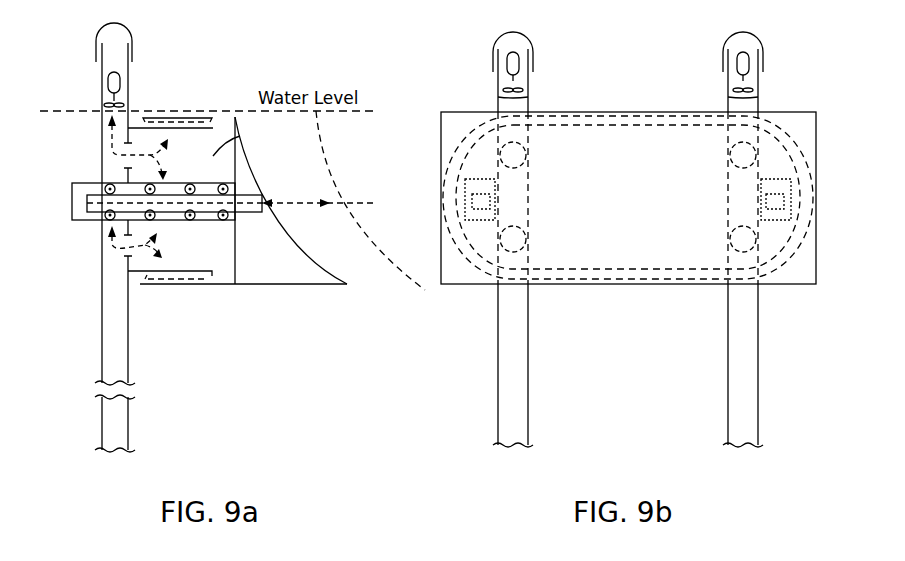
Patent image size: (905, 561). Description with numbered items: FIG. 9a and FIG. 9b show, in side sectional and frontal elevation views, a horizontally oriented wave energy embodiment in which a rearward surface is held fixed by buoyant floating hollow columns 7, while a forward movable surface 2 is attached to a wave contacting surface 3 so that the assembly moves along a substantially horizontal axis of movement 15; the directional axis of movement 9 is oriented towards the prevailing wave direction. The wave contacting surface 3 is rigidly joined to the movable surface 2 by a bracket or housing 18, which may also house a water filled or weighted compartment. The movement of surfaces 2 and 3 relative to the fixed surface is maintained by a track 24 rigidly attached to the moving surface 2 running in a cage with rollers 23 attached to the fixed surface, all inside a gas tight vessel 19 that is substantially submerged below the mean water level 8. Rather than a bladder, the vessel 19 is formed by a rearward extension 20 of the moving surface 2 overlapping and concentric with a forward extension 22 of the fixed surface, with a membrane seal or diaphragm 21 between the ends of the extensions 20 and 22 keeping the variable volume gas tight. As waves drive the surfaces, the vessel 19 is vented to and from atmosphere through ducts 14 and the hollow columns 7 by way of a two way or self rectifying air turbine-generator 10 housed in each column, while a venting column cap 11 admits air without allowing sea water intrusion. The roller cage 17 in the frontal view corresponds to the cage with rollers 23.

In FIG. 9a, the movable surface 2 is at (237, 171).
In FIG. 9a, the wave contacting surface 3 is at (322, 268).
In FIG. 9b, the wave contacting surface 3 is at (630, 210).
In FIG. 9a, the floating hollow column 7 is at (112, 343).
In FIG. 9b, the floating hollow column 7 is at (505, 356).
In FIG. 9a, the mean water level 8 is at (70, 110).
In FIG. 9a, the directional axis of movement 9 is at (355, 198).
In FIG. 9a, the air turbine-generator 10 is at (121, 82).
In FIG. 9b, the air turbine-generator 10 is at (520, 70).
In FIG. 9a, the venting column cap 11 is at (128, 29).
In FIG. 9b, the venting column cap 11 is at (530, 34).
In FIG. 9a, the duct 14 is at (123, 248).
In FIG. 9b, the duct 14 is at (520, 154).
In FIG. 9a, the range of motion 15 is at (312, 205).
In FIG. 9a, the guide frame 17 is at (83, 221).
In FIG. 9b, the guide frame 17 is at (478, 179).
In FIG. 9a, the housing 18 is at (283, 273).
In FIG. 9a, the gas tight vessel 19 is at (240, 137).
In FIG. 9a, the rearward extension 20 is at (233, 115).
In FIG. 9b, the rearward extension 20 is at (610, 112).
In FIG. 9a, the membrane seal 21 is at (195, 117).
In FIG. 9b, the membrane seal 21 is at (610, 127).
In FIG. 9a, the forward extension 22 is at (187, 130).
In FIG. 9a, the cage with rollers 23 is at (198, 220).
In FIG. 9b, the cage with rollers 23 is at (472, 220).
In FIG. 9a, the track 24 is at (98, 200).
In FIG. 9b, the track 24 is at (478, 202).